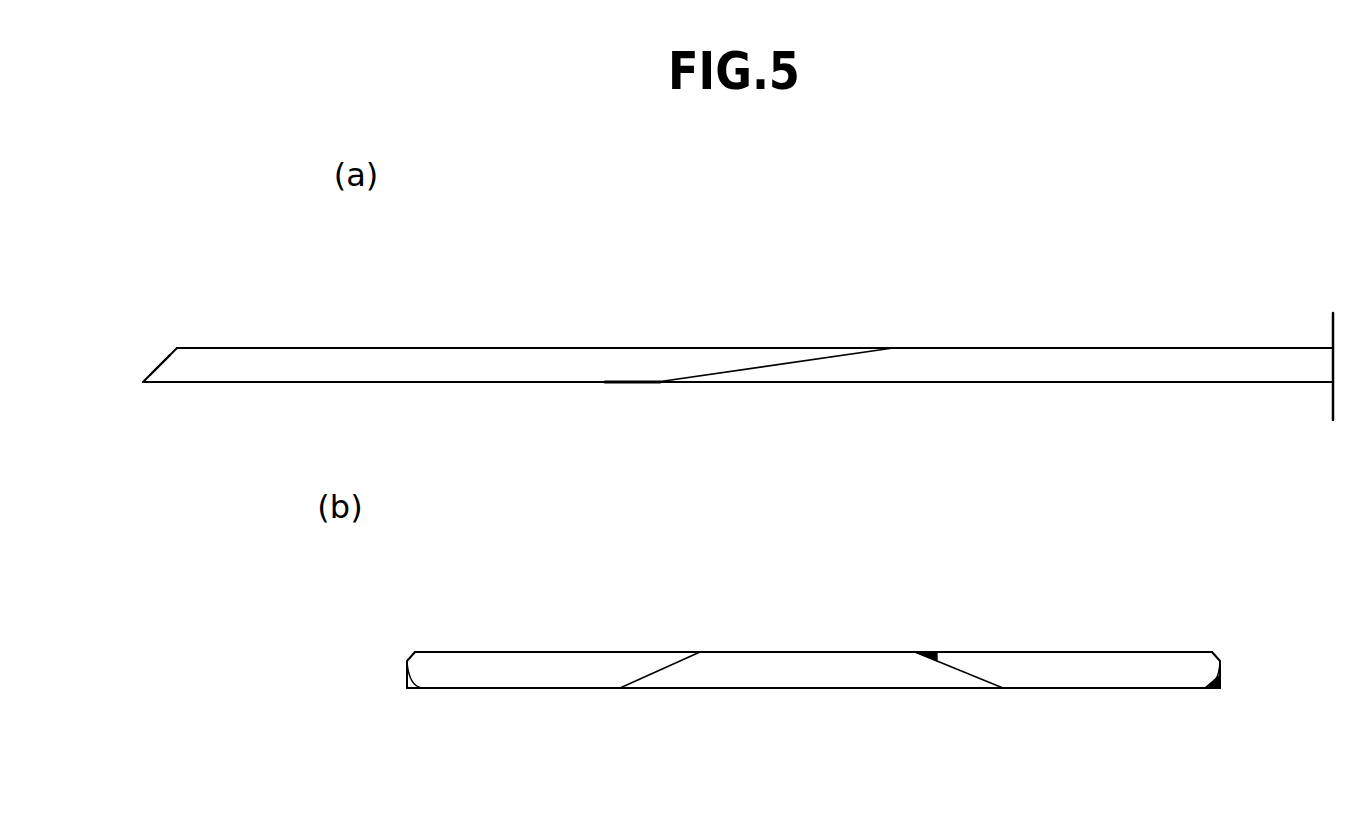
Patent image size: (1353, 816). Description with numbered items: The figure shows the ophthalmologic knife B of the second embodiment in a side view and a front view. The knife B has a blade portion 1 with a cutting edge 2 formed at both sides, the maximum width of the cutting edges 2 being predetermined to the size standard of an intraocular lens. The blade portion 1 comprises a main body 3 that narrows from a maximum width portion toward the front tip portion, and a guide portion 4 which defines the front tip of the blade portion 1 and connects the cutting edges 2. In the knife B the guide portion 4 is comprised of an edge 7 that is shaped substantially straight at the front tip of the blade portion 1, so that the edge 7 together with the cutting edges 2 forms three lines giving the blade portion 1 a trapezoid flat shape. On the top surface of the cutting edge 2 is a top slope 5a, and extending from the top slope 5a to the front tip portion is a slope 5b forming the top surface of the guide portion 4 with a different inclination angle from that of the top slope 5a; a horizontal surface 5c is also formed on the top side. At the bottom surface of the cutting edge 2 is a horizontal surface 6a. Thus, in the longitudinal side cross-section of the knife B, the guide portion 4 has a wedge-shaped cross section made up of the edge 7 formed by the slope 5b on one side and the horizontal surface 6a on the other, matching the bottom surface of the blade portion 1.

The blade portion 1 is at (633, 340).
The cutting edge 2 is at (262, 382).
The main body 3 is at (316, 337).
The guide portion 4 is at (130, 389).
The top slope 5a is at (407, 362).
The slope 5b is at (157, 368).
The horizontal surface 5c is at (507, 348).
The horizontal surface 6a is at (560, 386).
The edge 7 is at (145, 383).
The knife B is at (920, 352).